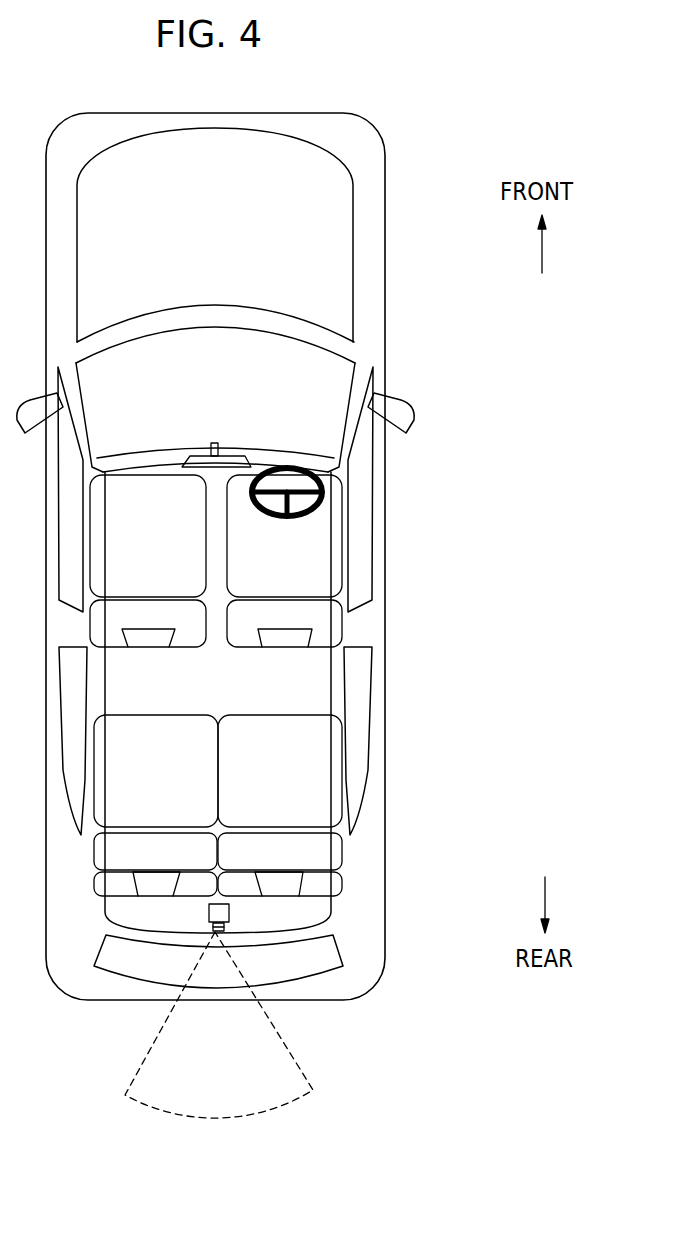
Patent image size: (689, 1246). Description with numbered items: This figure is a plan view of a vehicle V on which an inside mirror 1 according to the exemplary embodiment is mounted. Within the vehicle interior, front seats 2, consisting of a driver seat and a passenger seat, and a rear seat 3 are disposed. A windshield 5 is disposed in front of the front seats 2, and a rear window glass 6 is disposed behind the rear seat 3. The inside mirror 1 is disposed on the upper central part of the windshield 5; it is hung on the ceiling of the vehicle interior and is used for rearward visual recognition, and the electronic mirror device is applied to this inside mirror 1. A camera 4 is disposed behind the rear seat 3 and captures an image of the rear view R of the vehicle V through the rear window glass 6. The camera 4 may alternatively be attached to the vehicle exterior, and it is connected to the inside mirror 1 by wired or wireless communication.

The vehicle V is at (385, 242).
The inside mirror 1 is at (229, 452).
The front seats 2 is at (288, 558).
The rear seat 3 is at (288, 778).
The camera 4 is at (217, 912).
The windshield 5 is at (325, 376).
The rear window glass 6 is at (323, 960).
The rear view R is at (219, 1037).